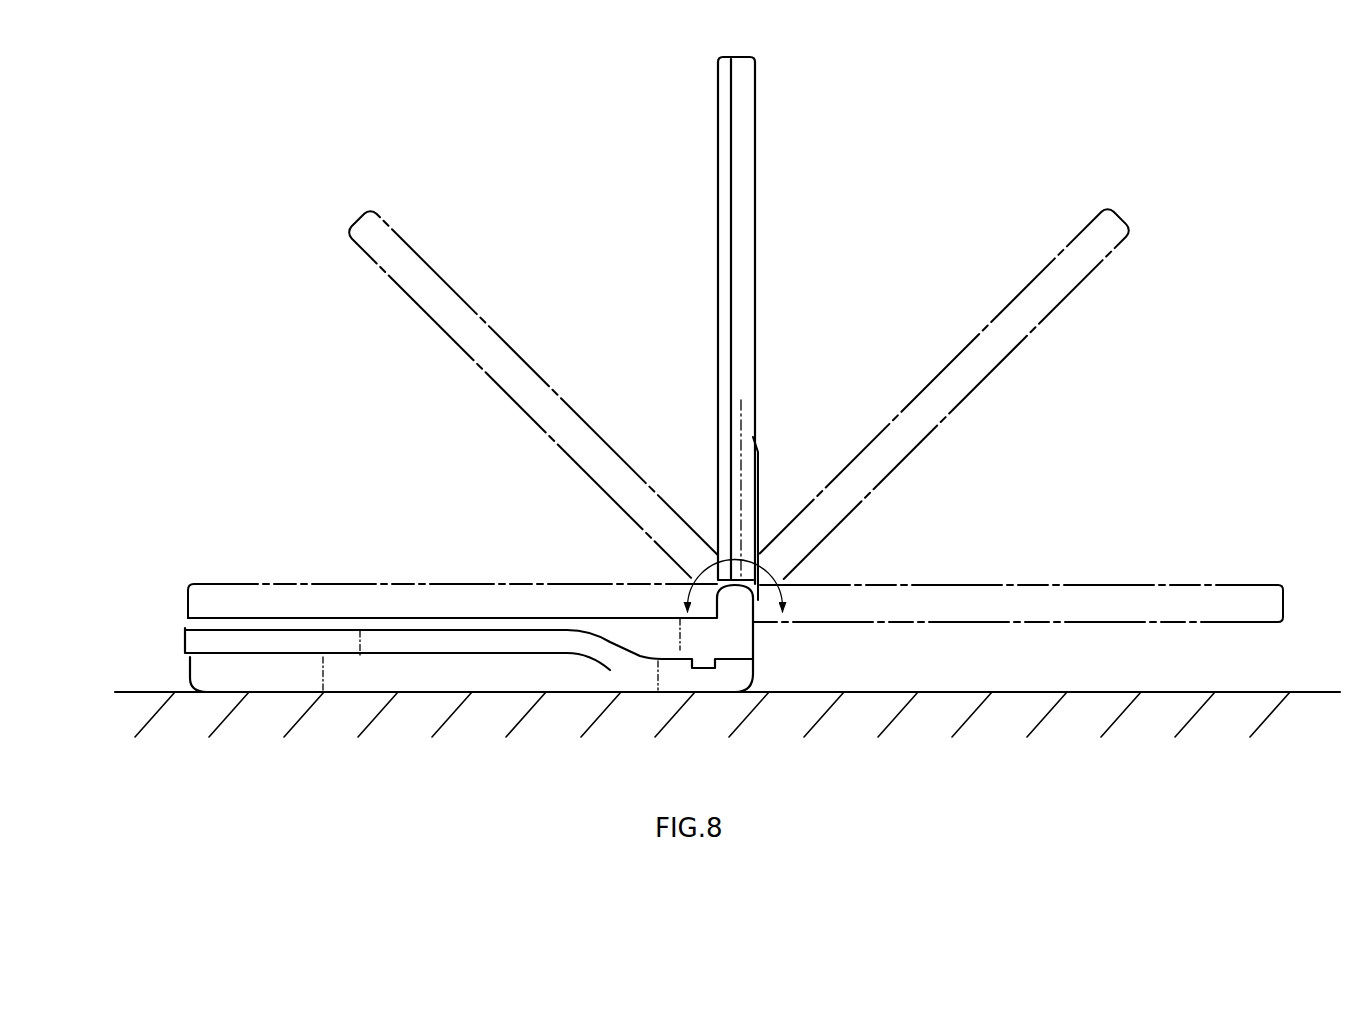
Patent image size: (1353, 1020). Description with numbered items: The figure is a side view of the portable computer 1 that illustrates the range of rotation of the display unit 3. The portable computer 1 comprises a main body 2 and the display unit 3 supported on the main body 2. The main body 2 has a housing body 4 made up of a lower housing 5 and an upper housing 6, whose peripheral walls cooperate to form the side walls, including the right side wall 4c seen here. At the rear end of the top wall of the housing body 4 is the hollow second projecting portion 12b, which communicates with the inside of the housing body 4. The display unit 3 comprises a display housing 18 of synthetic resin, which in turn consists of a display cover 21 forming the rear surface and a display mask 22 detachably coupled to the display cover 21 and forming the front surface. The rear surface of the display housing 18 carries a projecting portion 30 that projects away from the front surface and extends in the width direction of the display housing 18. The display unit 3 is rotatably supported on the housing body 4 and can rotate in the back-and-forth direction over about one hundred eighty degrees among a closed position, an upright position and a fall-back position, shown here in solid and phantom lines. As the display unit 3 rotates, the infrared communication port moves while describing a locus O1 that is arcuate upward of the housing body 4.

The portable computer 1 is at (705, 91).
The main body 2 is at (182, 637).
The display unit 3 is at (762, 177).
The housing body 4 is at (575, 529).
The lower housing 5 is at (505, 667).
The upper housing 6 is at (625, 633).
The right side wall 4c is at (420, 673).
The second projecting portion 12b is at (752, 612).
The display housing 18 is at (803, 255).
The display cover 21 is at (743, 347).
The display mask 22 is at (725, 283).
The projecting portion 30 is at (758, 523).
The locus O1 is at (772, 570).